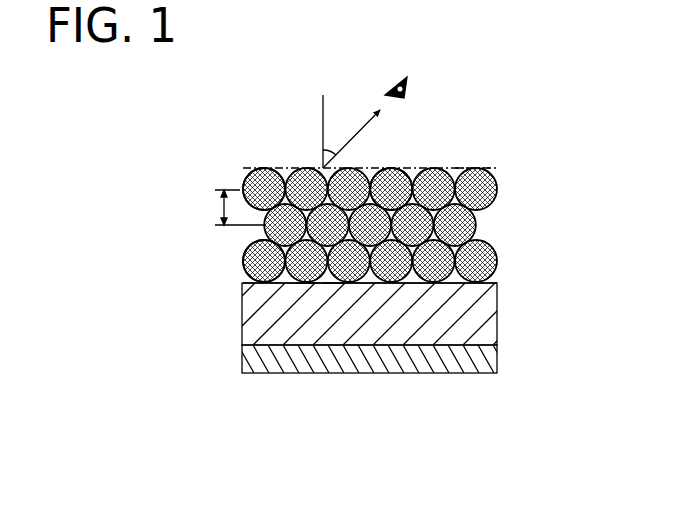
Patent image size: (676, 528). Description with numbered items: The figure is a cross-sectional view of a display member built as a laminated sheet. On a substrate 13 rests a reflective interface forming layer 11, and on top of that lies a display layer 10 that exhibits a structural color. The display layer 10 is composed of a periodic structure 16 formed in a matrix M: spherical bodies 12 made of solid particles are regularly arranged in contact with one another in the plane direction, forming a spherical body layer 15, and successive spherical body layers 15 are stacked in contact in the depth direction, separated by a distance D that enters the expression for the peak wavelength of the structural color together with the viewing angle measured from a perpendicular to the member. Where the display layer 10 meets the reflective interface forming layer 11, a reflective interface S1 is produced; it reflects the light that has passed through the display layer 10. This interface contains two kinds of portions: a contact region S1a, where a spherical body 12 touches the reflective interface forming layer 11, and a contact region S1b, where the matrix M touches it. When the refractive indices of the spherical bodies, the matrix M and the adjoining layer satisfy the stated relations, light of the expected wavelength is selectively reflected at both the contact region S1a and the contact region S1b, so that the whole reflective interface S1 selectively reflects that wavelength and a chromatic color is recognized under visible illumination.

The display layer 10 is at (508, 170).
The reflective interface forming layer 11 is at (508, 283).
The spherical body 12 is at (401, 168).
The substrate 13 is at (508, 346).
The spherical body layer 15 is at (241, 263).
The periodic structure 16 is at (241, 178).
The distance between the spherical body layers D is at (230, 207).
The matrix M is at (455, 168).
The reflective interface S1 is at (279, 287).
The contact region S1a is at (316, 283).
The contact region S1b is at (333, 283).